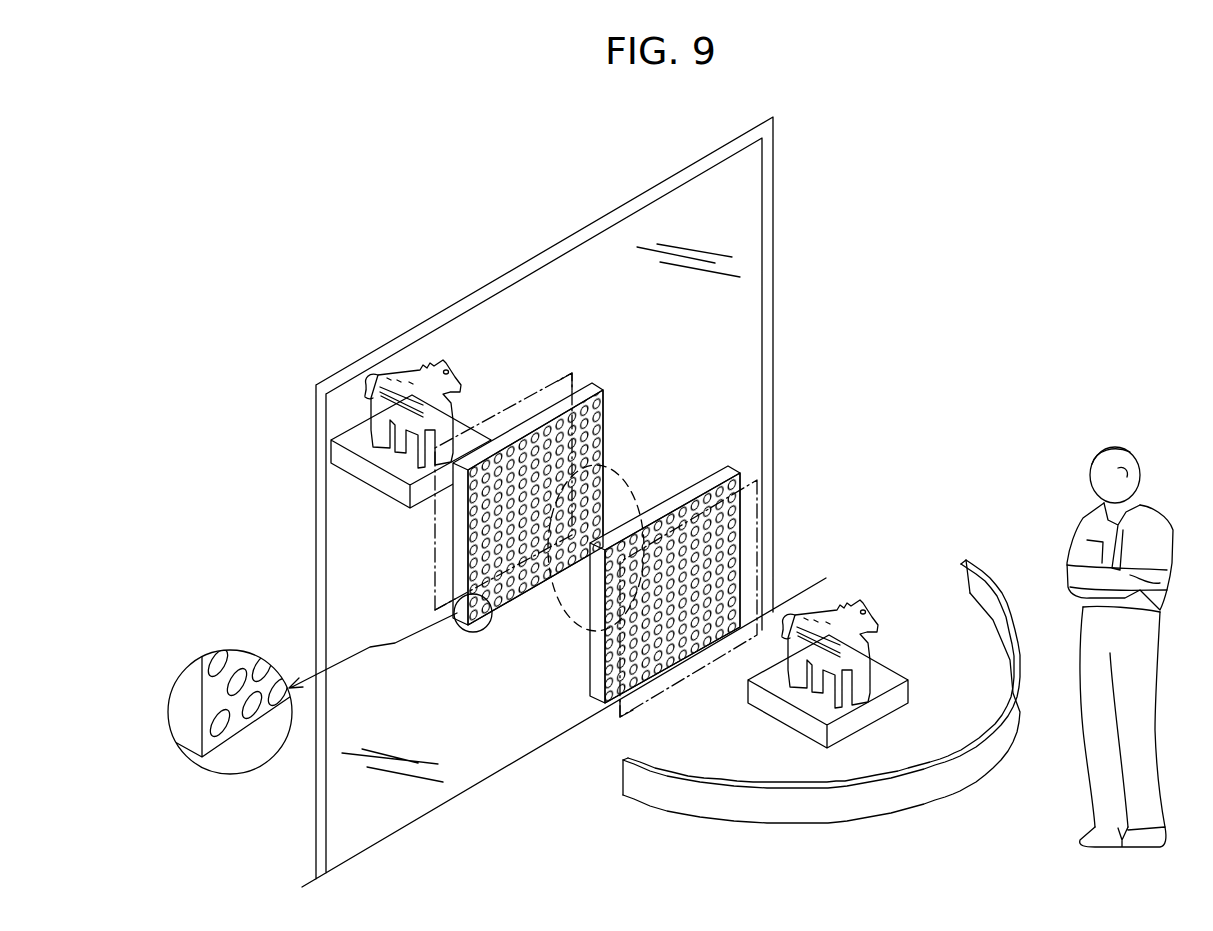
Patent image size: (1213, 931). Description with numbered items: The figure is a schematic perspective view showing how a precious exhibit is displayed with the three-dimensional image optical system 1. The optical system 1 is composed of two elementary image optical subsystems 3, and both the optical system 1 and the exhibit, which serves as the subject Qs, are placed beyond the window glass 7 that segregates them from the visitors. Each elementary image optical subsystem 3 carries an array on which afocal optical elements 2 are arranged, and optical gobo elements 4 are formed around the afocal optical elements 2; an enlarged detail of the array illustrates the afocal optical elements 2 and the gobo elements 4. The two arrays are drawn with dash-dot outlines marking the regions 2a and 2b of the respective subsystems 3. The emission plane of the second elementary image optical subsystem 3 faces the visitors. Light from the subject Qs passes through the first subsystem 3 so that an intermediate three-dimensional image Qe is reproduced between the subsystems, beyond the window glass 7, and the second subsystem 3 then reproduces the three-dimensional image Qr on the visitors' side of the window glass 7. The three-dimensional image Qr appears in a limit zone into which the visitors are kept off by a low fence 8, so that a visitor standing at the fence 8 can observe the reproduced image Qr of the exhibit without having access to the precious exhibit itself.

The three-dimensional image optical system 1 is at (505, 560).
The afocal optical element 2 is at (454, 600).
The first lens array region 2a is at (553, 382).
The second lens array region 2b is at (777, 548).
The elementary image optical subsystem 3 is at (592, 383).
The optical gobo element 4 is at (238, 727).
The window glass 7 is at (748, 190).
The low fence 8 is at (663, 797).
The object Qs is at (459, 352).
The three-dimensional image Qr is at (872, 591).
The intermediate three-dimensional image Qe is at (568, 606).